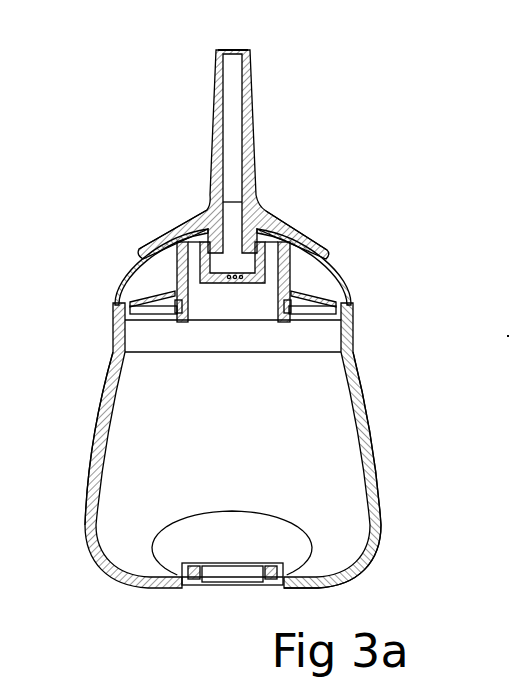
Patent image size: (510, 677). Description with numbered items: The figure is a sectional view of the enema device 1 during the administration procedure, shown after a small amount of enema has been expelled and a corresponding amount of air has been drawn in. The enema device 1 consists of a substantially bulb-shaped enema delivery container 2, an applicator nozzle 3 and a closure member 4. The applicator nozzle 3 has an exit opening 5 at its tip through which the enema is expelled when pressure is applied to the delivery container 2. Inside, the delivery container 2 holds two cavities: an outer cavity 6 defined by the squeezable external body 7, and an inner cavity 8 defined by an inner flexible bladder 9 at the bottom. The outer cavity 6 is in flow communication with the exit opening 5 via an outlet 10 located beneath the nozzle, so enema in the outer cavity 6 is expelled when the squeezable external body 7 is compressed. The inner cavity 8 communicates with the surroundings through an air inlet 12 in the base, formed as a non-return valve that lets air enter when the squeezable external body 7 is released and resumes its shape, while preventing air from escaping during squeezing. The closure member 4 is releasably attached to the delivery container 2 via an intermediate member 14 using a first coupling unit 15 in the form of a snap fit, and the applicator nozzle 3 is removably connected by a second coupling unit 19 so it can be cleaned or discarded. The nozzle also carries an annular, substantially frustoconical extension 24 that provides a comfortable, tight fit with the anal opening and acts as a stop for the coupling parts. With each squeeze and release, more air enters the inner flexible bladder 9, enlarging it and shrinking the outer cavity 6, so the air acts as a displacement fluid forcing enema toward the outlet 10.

The enema device 1 is at (355, 172).
The enema delivery container 2 is at (88, 540).
The applicator nozzle 3 is at (256, 158).
The closure member 4 is at (345, 282).
The exit opening 5 is at (240, 52).
The outer cavity 6 is at (340, 380).
The squeezable external body 7 is at (103, 420).
The inner cavity 8 is at (178, 548).
The inner flexible bladder 9 is at (313, 548).
The outlet 10 is at (231, 278).
The air inlet 12 is at (236, 574).
The intermediate member 14 is at (125, 338).
The first coupling unit 15 is at (178, 290).
The second coupling unit 19 is at (278, 222).
The annular frustoconical extension 24 is at (165, 236).